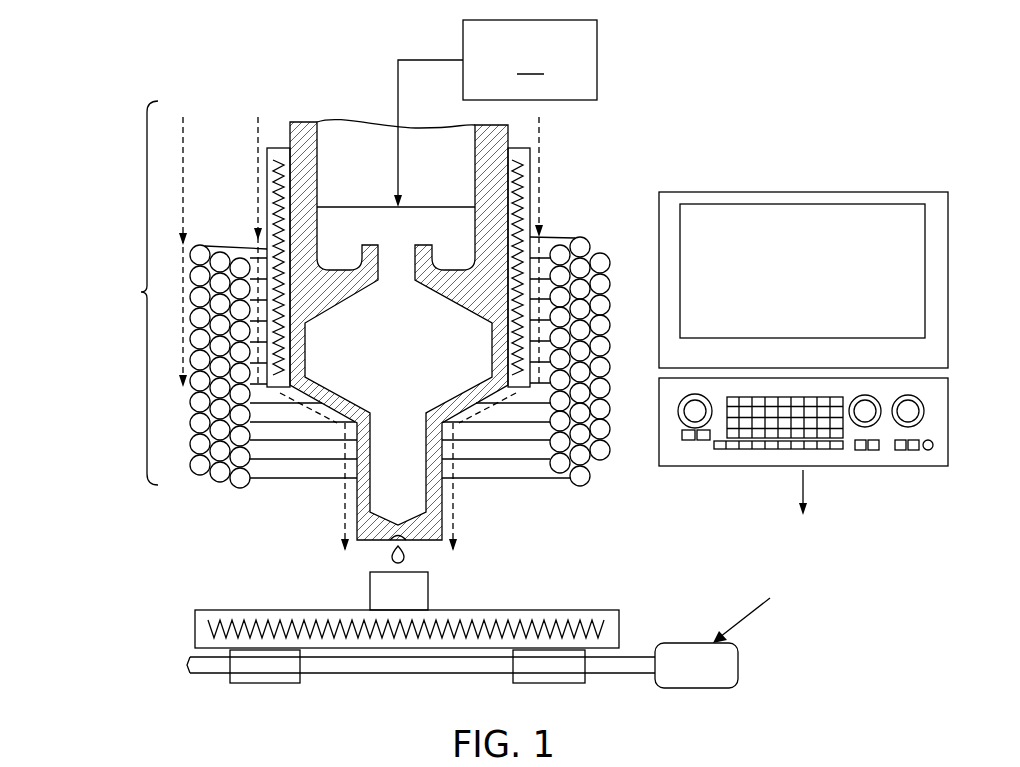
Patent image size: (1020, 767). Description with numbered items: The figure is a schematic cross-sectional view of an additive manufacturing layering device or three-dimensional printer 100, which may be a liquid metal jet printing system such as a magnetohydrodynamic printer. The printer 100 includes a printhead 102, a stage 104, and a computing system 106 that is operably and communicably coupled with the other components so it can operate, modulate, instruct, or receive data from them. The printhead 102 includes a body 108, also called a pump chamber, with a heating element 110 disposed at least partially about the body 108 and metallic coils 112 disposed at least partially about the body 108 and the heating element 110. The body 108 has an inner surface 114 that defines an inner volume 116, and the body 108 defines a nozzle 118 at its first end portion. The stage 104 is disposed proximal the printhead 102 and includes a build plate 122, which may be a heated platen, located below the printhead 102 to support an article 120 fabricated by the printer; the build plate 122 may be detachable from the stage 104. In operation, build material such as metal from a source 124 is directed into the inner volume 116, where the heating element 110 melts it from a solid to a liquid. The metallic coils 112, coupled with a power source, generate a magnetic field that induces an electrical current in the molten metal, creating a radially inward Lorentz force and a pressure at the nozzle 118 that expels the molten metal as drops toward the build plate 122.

The 3D printer 100 is at (92, 98).
The printhead 102 is at (324, 326).
The stage 104 is at (172, 669).
The computing system 106 is at (771, 184).
The body 108 is at (302, 113).
The heating element 110 is at (278, 147).
The metallic coil 112 is at (583, 230).
The inner surface 114 is at (475, 158).
The inner volume 116 is at (414, 364).
The nozzle 118 is at (455, 508).
The article 120 is at (430, 596).
The build plate 122 is at (290, 606).
The source 124 is at (495, 113).